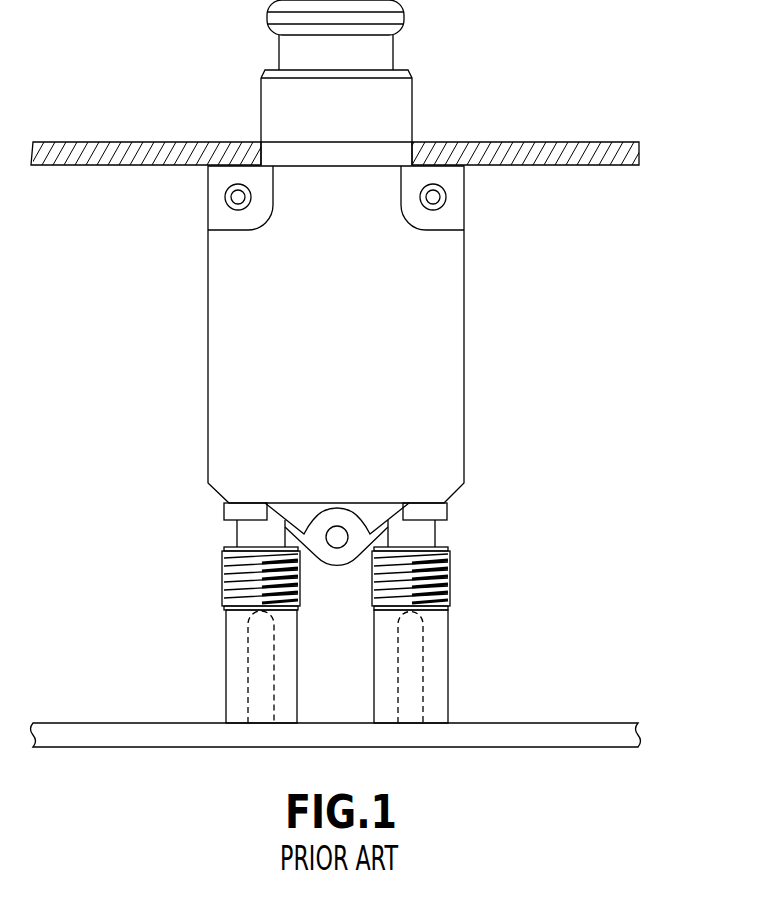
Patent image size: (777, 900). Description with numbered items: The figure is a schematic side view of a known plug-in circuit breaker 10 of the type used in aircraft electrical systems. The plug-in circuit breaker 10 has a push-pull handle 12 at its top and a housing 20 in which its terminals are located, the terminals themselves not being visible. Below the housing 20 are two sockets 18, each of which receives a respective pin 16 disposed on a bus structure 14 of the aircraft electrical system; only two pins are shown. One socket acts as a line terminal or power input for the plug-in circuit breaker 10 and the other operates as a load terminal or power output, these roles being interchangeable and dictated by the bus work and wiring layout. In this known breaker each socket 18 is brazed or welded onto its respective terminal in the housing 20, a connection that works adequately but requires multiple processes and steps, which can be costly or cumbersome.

The plug-in circuit breaker 10 is at (422, 361).
The push-pull handle 12 is at (387, 49).
The bus structure 14 is at (614, 713).
The pin 16 is at (423, 678).
The socket 18 is at (226, 645).
The housing 20 is at (447, 343).